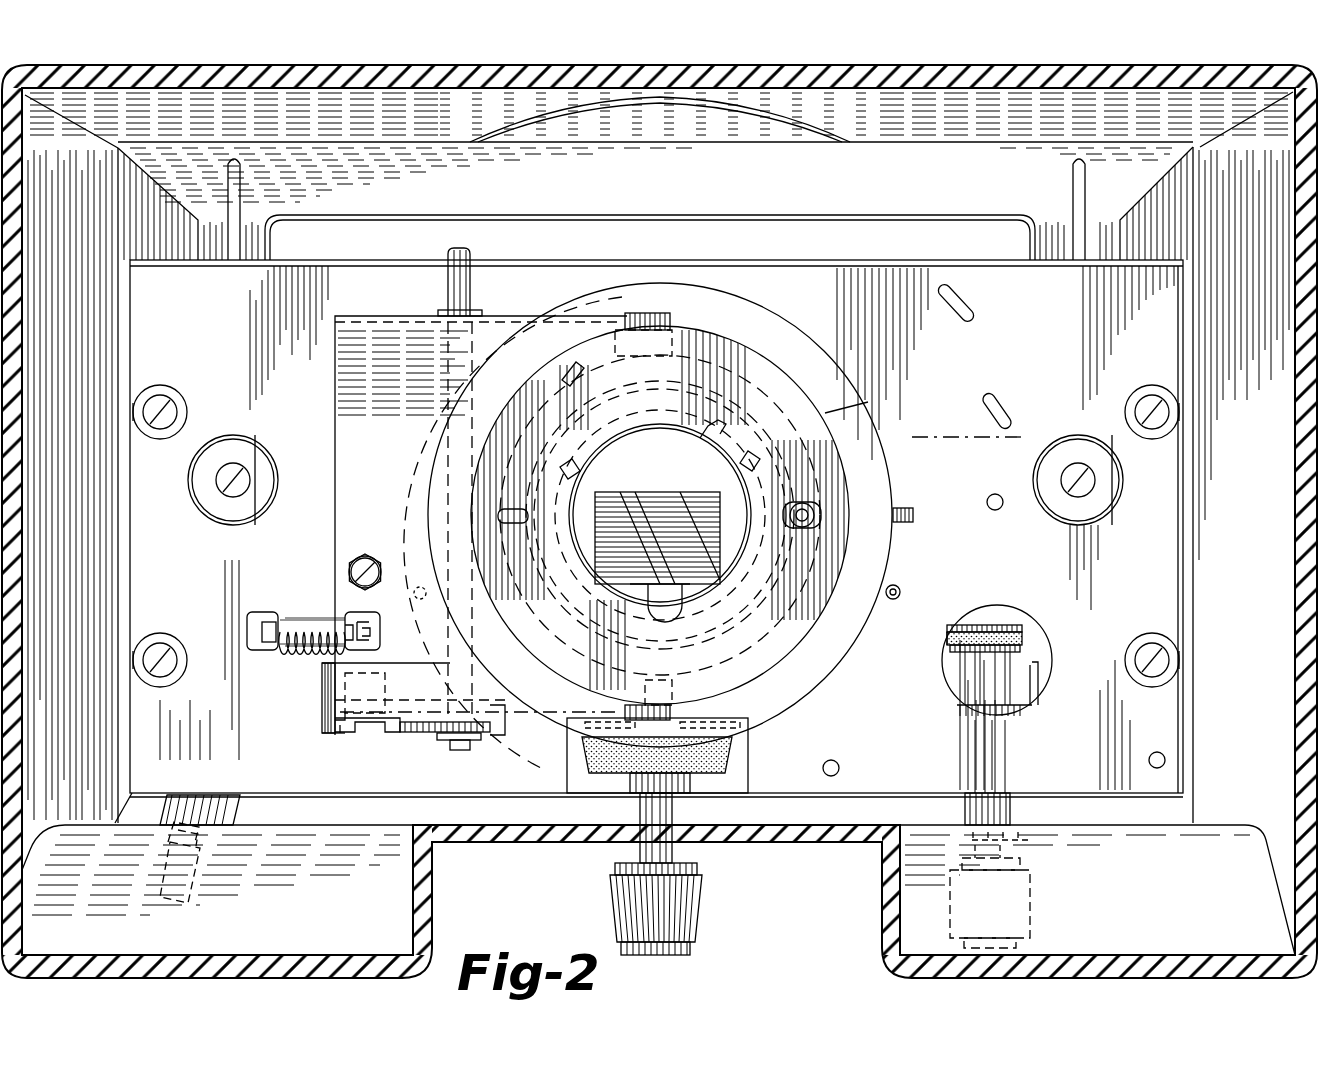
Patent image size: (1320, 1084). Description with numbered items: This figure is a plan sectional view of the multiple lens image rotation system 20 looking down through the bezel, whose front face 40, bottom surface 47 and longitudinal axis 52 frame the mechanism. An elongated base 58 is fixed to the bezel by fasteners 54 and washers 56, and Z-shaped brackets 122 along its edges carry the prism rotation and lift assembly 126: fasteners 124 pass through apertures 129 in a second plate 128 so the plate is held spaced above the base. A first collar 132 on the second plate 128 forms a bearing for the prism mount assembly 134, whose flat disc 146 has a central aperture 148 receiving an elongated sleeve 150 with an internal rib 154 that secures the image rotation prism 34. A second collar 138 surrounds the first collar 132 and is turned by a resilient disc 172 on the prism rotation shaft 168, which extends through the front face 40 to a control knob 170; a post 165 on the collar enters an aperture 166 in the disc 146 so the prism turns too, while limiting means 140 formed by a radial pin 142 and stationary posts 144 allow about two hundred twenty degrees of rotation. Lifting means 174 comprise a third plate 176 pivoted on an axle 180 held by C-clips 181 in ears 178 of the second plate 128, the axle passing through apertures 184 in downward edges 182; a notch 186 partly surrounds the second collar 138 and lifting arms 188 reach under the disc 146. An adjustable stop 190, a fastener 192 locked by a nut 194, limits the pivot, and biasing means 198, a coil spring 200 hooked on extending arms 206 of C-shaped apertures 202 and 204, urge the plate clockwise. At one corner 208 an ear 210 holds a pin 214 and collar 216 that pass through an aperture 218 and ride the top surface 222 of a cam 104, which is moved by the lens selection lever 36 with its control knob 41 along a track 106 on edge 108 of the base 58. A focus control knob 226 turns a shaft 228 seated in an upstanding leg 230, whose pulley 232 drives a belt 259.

The multiple lens image rotation system 20 is at (958, 185).
The image rotation prism 34 is at (675, 478).
The lens selection lever 36 is at (245, 805).
The front face 40 is at (762, 835).
The control knob 41 is at (205, 885).
The bottom surface 47 is at (598, 245).
The longitudinal axis 52 is at (975, 432).
The fasteners 54 is at (1100, 465).
The washers 56 is at (1095, 503).
The elongated base 58 is at (990, 705).
The cam 104 is at (322, 725).
The track 106 is at (385, 735).
The edge 108 is at (510, 745).
The Z-shaped brackets 122 is at (1108, 505).
The fasteners 124 is at (1212, 660).
The prism rotation and lift assembly 126 is at (855, 275).
The second plate 128 is at (1119, 794).
The apertures 129 is at (1179, 652).
The first collar 132 is at (789, 340).
The prism mount assembly 134 is at (845, 414).
The second collar 138 is at (845, 638).
The means for limiting rotational displacement 140 is at (942, 543).
The pin 142 is at (912, 507).
The stationary posts 144 is at (417, 585).
The disc 146 is at (828, 436).
The aperture 148 is at (743, 415).
The elongated sleeve 150 is at (672, 612).
The rib 154 is at (690, 580).
The post 165 is at (818, 518).
The aperture 166 is at (818, 508).
The prism rotation shaft 168 is at (672, 808).
The control knob 170 is at (695, 910).
The resilient disc 172 is at (596, 760).
The lifting means 174 is at (244, 384).
The third plate 176 is at (323, 409).
The ears 178 is at (425, 733).
The axle 180 is at (470, 255).
The C-clips 181 is at (458, 750).
The edges 182 is at (520, 735).
The apertures 184 is at (480, 685).
The notch 186 is at (568, 320).
The lifting arms 188 is at (672, 715).
The adjustable stop 190 is at (299, 546).
The fastener 192 is at (358, 553).
The nut 194 is at (350, 563).
The biasing means 198 is at (300, 619).
The coil spring 200 is at (310, 615).
The C-shaped aperture 202 is at (355, 605).
The C-shaped aperture 204 is at (247, 620).
The extending arms 206 is at (405, 615).
The corner 208 is at (322, 710).
The ear 210 is at (335, 745).
The pin 214 is at (322, 668).
The collar 216 is at (322, 695).
The aperture 218 is at (322, 722).
The top surface 222 is at (345, 740).
The focus control knob 226 is at (950, 910).
The shaft 228 is at (965, 810).
The upstanding leg 230 is at (960, 680).
The pulley 232 is at (1005, 625).
The drive belt 259 is at (947, 640).